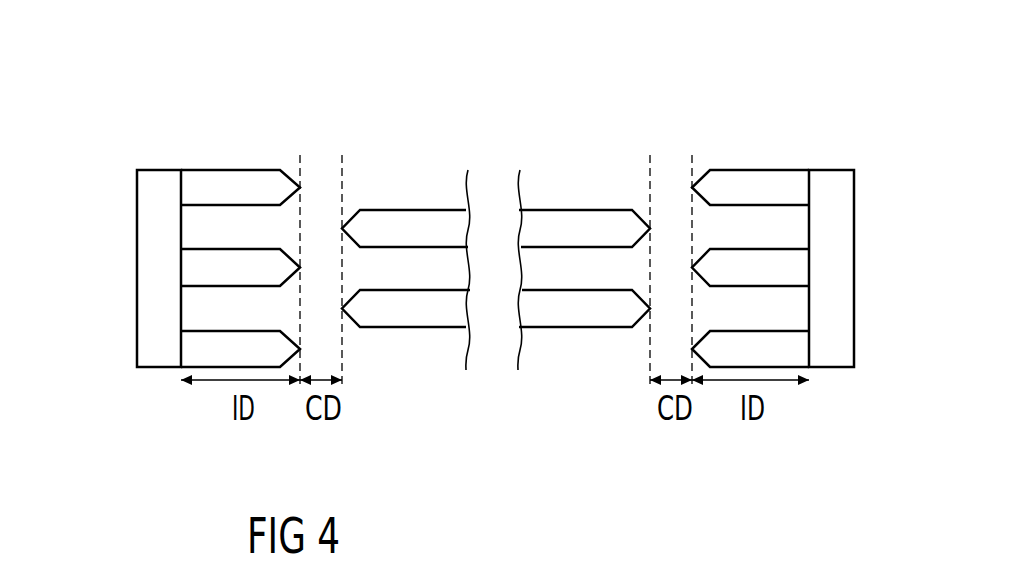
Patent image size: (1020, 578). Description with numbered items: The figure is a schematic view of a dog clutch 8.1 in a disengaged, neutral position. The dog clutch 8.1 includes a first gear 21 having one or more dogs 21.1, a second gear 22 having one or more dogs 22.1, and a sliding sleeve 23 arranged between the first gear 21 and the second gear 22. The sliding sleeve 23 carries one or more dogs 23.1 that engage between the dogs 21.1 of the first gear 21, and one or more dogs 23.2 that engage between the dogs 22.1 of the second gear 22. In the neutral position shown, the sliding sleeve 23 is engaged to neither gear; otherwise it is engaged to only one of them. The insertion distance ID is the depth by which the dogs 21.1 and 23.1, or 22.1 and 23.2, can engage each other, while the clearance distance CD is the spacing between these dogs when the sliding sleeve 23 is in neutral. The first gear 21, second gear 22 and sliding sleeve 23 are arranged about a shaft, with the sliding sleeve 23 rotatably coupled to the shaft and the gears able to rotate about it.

The dog clutch 8.1 is at (333, 126).
The first gear 21 is at (155, 260).
The dogs of the first gear 21.1 is at (233, 180).
The second gear 22 is at (838, 230).
The dogs of the second gear 22.1 is at (758, 182).
The sliding sleeve 23 is at (496, 208).
The dogs of the sliding sleeve 23.1 is at (420, 222).
The dogs of the sliding sleeve 23.2 is at (607, 222).